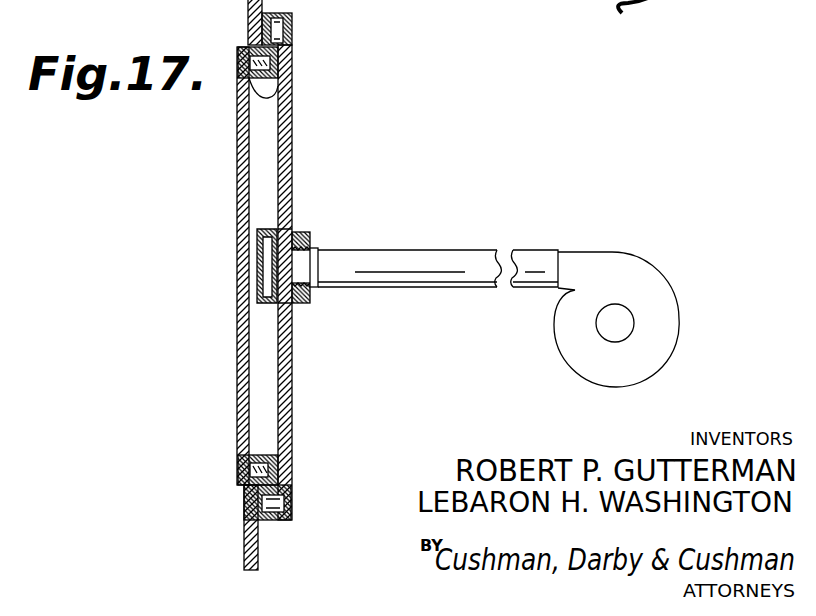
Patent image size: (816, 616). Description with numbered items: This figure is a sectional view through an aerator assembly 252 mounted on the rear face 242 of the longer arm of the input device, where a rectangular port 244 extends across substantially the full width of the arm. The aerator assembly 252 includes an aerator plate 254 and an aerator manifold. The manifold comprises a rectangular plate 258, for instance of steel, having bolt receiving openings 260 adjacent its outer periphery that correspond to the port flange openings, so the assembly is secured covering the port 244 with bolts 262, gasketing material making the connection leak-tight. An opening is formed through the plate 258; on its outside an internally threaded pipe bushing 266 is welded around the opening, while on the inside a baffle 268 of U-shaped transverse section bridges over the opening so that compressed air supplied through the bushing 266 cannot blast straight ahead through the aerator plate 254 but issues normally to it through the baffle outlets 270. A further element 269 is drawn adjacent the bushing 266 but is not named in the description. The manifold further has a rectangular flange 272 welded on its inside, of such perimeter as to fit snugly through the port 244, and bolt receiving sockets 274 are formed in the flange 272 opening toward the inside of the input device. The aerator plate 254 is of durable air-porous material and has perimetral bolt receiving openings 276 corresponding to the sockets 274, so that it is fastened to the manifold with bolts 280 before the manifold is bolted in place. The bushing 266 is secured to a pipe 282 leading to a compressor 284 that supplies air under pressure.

The rear face 242 is at (258, 548).
The rectangular port 244 is at (249, 44).
The aerator assembly 252 is at (233, 345).
The aerator plate 254 is at (242, 210).
The rectangular plate 258 is at (292, 158).
The bolt receiving openings 260 is at (292, 20).
The bolts 262 is at (291, 36).
The internally threaded pipe bushing 266 is at (300, 233).
The baffle 268 is at (262, 225).
The tube 269 is at (284, 280).
The baffle outlets 270 is at (268, 266).
The rectangular flange 272 is at (266, 88).
The bolt receiving sockets 274 is at (250, 86).
The bolt receiving openings 276 is at (243, 465).
The bolts 280 is at (243, 468).
The pipes 282 is at (536, 237).
The compressor 284 is at (668, 308).